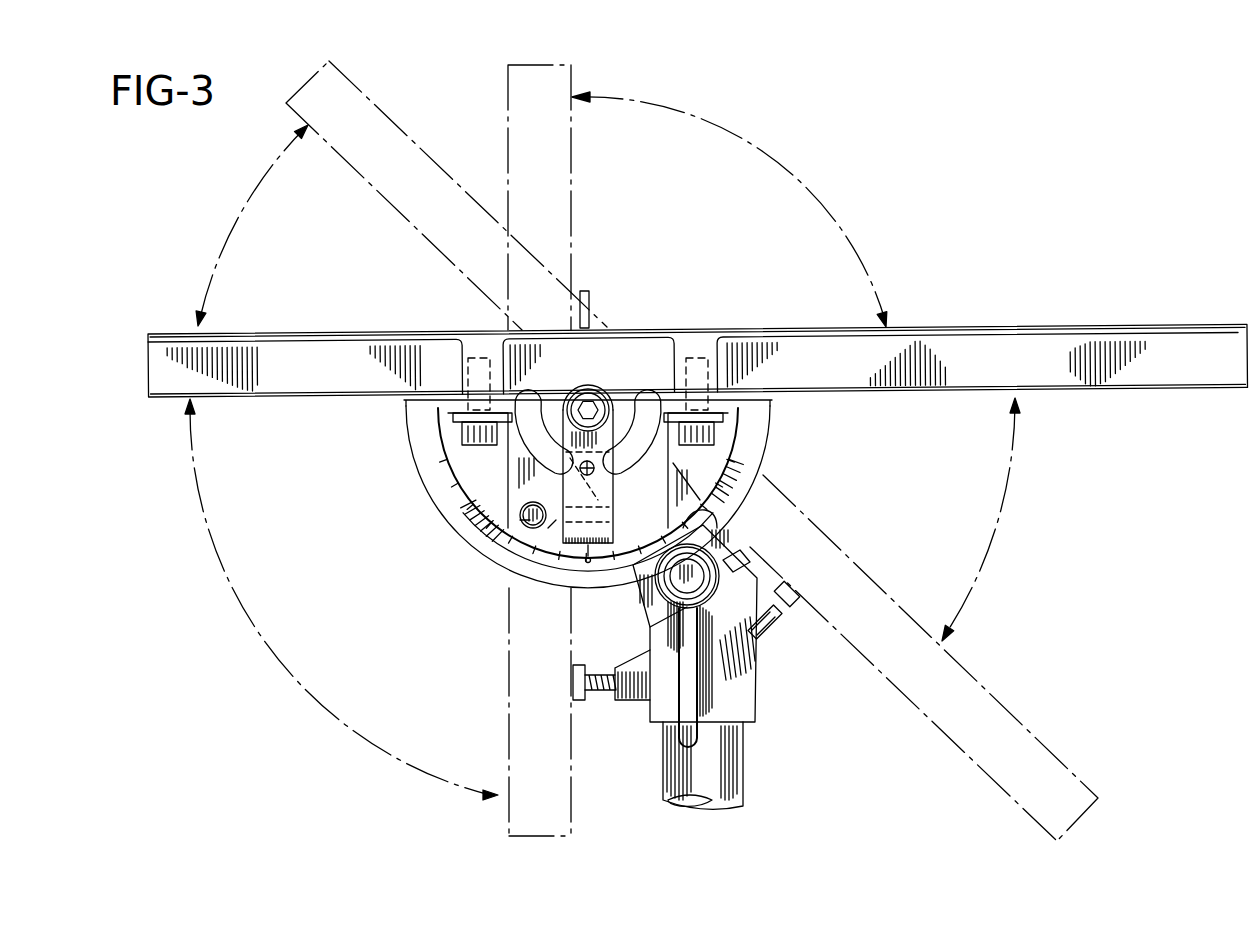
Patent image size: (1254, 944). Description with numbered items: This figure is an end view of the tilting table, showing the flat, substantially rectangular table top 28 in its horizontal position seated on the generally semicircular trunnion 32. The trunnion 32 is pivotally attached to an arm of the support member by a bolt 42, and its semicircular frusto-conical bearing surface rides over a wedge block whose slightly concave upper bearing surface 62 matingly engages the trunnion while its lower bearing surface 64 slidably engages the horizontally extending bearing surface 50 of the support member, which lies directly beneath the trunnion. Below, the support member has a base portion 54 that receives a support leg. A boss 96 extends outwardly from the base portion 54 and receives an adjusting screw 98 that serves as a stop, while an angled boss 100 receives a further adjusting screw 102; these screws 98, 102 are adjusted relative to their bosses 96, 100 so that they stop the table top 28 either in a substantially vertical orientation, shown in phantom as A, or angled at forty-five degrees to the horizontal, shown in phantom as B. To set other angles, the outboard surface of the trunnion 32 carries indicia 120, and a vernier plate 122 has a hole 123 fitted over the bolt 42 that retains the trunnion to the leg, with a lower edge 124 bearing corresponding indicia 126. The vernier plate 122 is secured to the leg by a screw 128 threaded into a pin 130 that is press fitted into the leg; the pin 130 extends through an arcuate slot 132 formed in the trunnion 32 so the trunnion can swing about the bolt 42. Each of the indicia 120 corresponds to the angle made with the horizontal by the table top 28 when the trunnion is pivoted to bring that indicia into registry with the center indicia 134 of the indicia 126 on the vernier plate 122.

The table top 28 is at (960, 330).
The trunnion 32 is at (762, 428).
The bolt 42 is at (592, 396).
The bearing surface 50 is at (738, 560).
The base portion 54 is at (757, 706).
The upper bearing surface 62 is at (712, 516).
The lower bearing surface 64 is at (699, 591).
The boss 96 is at (640, 707).
The adjusting screw 98 is at (594, 693).
The angled boss 100 is at (774, 628).
The adjusting screw 102 is at (790, 595).
The indicia 120 is at (597, 560).
The vernier plate 122 is at (606, 521).
The hole 123 is at (580, 395).
The lower edge 124 is at (573, 548).
The indicia 126 is at (550, 530).
The screw 128 is at (600, 461).
The pin 130 is at (604, 480).
The arcuate slot 132 is at (531, 438).
The center indicia 134 is at (556, 530).
The vertical orientation A is at (576, 205).
The angled orientation B is at (397, 137).